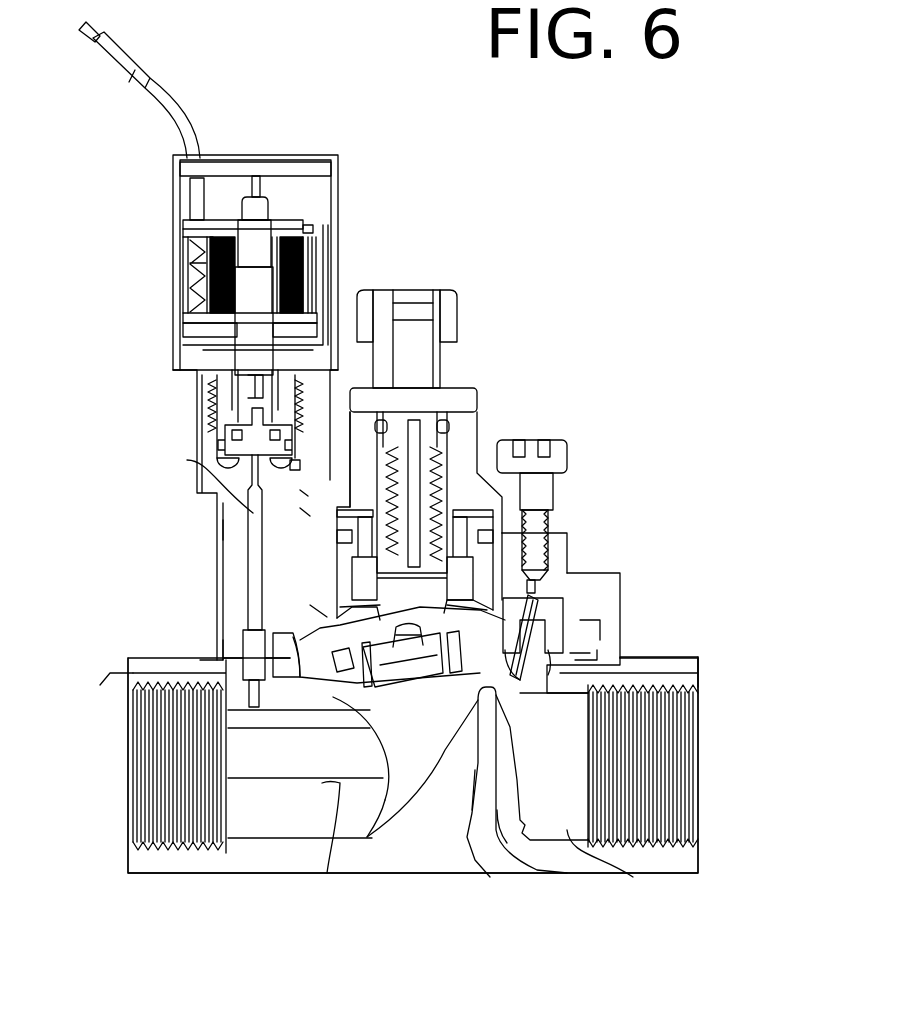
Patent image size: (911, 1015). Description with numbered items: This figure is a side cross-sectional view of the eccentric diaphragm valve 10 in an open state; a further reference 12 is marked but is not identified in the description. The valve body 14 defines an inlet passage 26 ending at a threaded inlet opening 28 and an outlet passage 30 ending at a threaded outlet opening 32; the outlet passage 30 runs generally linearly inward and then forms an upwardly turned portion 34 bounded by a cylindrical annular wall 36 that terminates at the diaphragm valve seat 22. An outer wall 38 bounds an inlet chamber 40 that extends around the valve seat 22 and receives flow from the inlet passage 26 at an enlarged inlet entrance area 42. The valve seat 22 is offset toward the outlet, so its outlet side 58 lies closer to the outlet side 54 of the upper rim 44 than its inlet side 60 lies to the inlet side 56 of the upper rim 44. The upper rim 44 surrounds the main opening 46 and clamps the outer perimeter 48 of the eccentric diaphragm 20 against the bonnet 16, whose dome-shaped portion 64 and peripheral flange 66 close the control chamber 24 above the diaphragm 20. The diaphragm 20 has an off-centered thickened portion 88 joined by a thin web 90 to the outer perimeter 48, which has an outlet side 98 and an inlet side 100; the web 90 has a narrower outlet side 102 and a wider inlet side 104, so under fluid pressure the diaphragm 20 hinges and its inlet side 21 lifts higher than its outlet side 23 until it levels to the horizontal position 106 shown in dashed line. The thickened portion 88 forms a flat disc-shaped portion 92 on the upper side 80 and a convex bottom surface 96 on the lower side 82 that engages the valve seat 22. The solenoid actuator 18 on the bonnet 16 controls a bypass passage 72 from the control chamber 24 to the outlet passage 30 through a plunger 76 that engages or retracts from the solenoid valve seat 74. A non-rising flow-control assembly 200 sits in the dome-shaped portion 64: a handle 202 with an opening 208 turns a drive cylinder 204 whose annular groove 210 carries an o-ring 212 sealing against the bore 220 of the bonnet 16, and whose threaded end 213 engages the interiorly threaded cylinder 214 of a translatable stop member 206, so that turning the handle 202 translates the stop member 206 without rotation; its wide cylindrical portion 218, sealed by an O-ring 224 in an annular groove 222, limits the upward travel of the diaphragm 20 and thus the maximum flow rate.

The eccentric diaphragm valve 10 is at (643, 302).
The valve 12 is at (655, 329).
The valve body 14 is at (453, 867).
The bonnet 16 is at (467, 400).
The solenoid actuator 18 is at (340, 213).
The eccentric diaphragm 20 is at (322, 783).
The inlet side of the diaphragm 21 is at (467, 620).
The diaphragm valve seat 22 is at (545, 860).
The outlet side of the diaphragm 23 is at (320, 685).
The control chamber 24 is at (253, 567).
The inlet passage 26 is at (633, 877).
The inlet opening 28 is at (703, 678).
The outlet passage 30 is at (262, 828).
The outlet opening 32 is at (128, 864).
The upwardly turned portion 34 is at (407, 803).
The annular wall 36 is at (500, 873).
The outer wall 38 is at (533, 707).
The inlet chamber 40 is at (530, 740).
The inlet entrance area 42 is at (700, 687).
The upper rim 44 is at (597, 637).
The main opening 46 is at (287, 627).
The outer perimeter of the diaphragm 48 is at (570, 653).
The outlet side of the upper rim 54 is at (130, 686).
The inlet side of the upper rim 56 is at (580, 655).
The outlet side of the valve seat 58 is at (330, 723).
The inlet side of the valve seat 60 is at (470, 717).
The dome-shaped portion 64 is at (447, 487).
The peripheral flange 66 is at (610, 583).
The bypass passage 72 is at (250, 525).
The solenoid valve seat 74 is at (223, 380).
The plunger 76 is at (227, 363).
The upper side of the diaphragm 80 is at (455, 610).
The lower side of the diaphragm 82 is at (435, 690).
The thickened portion 88 is at (350, 683).
The thin web 90 is at (503, 577).
The disc-shaped portion 92 is at (363, 627).
The convex outer bottom surface 96 is at (460, 745).
The outlet side of the outer perimeter 98 is at (240, 653).
The inlet side of the outer perimeter 100 is at (590, 663).
The outlet side of the web 102 is at (290, 600).
The inlet side of the web 104 is at (557, 593).
The horizontal position 106 is at (187, 460).
The flow-control assembly 200 is at (486, 300).
The handle 202 is at (413, 345).
The drive cylinder 204 is at (418, 340).
The opening 208 is at (415, 300).
The annular groove 210 is at (375, 420).
The o-ring 212 is at (375, 433).
The threaded end 213 is at (560, 403).
The interiorly threaded cylinder 214 is at (560, 423).
The cylindrical portion 218 is at (523, 560).
The bore 220 is at (450, 437).
The annular groove 222 is at (300, 490).
The O-ring 224 is at (300, 508).
The translatable stop member 206 is at (568, 448).